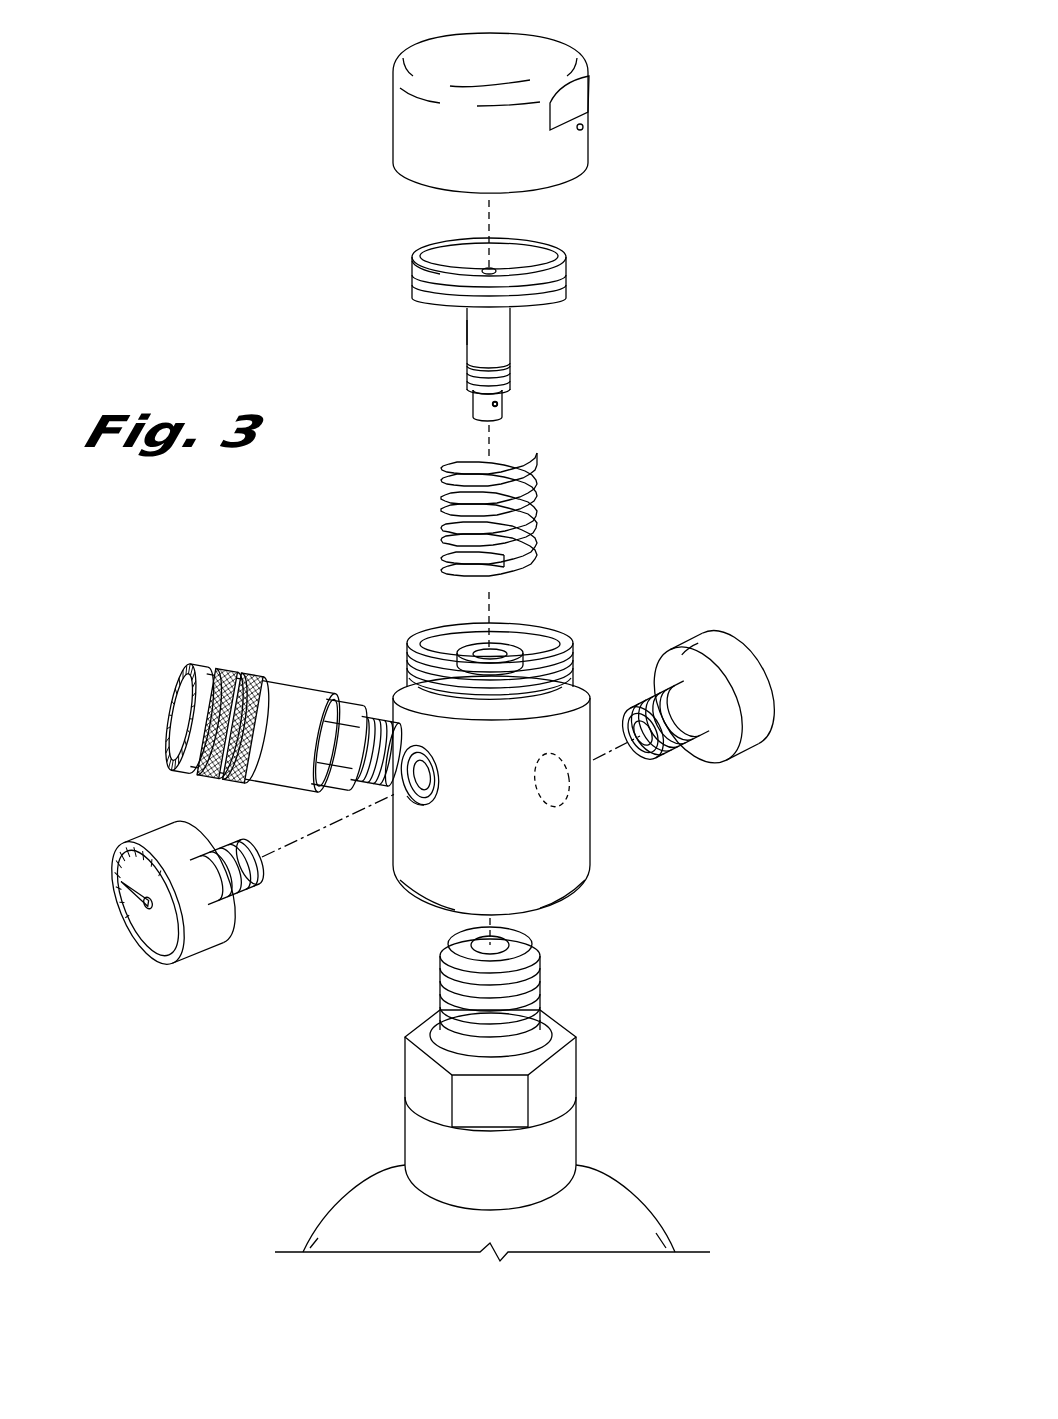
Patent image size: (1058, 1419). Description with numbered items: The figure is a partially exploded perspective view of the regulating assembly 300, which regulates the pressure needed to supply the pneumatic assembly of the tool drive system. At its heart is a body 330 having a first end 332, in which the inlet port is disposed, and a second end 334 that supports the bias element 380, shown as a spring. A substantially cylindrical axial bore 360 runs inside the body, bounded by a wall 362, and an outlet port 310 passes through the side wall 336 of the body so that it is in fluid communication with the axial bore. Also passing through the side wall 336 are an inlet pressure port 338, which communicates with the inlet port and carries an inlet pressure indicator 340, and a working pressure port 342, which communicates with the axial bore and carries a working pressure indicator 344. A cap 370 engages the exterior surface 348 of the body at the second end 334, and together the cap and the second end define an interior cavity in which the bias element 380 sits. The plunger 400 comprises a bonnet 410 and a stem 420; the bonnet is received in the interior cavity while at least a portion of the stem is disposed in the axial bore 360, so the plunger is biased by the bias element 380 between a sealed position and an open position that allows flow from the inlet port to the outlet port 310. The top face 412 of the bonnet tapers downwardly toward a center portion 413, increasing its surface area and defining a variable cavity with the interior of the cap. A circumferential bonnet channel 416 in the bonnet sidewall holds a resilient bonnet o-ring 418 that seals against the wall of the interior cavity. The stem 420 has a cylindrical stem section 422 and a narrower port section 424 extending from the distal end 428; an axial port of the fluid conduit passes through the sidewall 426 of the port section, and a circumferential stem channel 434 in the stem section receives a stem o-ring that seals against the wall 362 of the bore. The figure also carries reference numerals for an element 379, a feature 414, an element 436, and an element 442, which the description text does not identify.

The regulating assembly 300 is at (712, 291).
The outlet port 310 is at (168, 691).
The body 330 is at (566, 840).
The first end 332 is at (553, 903).
The second end 334 is at (552, 643).
The side wall 336 is at (410, 745).
The inlet pressure port 338 is at (566, 798).
The inlet pressure indicator 340 is at (768, 692).
The working pressure port 342 is at (412, 800).
The working pressure indicator 344 is at (142, 830).
The exterior surface 348 is at (453, 888).
The axial bore 360 is at (507, 654).
The wall 362 is at (477, 654).
The cap 370 is at (465, 57).
The cap tab 379 is at (585, 125).
The bias element 380 is at (543, 493).
The plunger 400 is at (528, 321).
The bonnet 410 is at (562, 256).
The top face 412 is at (446, 252).
The center portion 413 is at (483, 271).
The disc rim 414 is at (423, 270).
The circumferential bonnet channel 416 is at (557, 277).
The resilient bonnet o-ring 418 is at (558, 285).
The stem 420 is at (466, 348).
The stem section 422 is at (466, 337).
The port section 424 is at (473, 403).
The sidewall 426 is at (503, 397).
The distal end 428 is at (474, 418).
The circumferential stem channel 434 is at (511, 360).
The seal ring 436 is at (467, 373).
The passage 442 is at (497, 406).